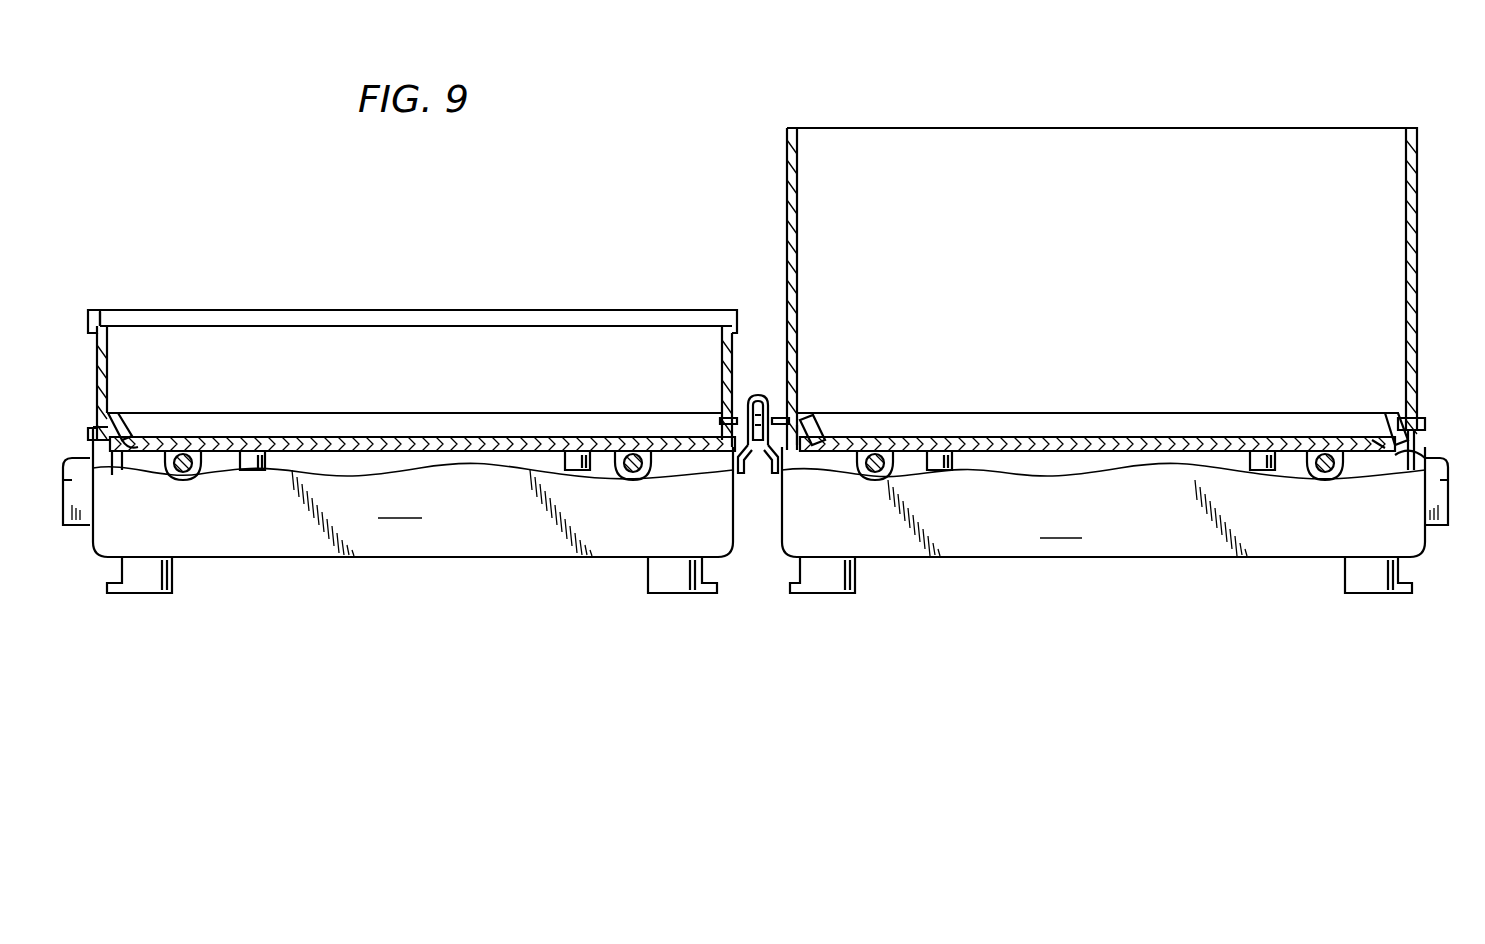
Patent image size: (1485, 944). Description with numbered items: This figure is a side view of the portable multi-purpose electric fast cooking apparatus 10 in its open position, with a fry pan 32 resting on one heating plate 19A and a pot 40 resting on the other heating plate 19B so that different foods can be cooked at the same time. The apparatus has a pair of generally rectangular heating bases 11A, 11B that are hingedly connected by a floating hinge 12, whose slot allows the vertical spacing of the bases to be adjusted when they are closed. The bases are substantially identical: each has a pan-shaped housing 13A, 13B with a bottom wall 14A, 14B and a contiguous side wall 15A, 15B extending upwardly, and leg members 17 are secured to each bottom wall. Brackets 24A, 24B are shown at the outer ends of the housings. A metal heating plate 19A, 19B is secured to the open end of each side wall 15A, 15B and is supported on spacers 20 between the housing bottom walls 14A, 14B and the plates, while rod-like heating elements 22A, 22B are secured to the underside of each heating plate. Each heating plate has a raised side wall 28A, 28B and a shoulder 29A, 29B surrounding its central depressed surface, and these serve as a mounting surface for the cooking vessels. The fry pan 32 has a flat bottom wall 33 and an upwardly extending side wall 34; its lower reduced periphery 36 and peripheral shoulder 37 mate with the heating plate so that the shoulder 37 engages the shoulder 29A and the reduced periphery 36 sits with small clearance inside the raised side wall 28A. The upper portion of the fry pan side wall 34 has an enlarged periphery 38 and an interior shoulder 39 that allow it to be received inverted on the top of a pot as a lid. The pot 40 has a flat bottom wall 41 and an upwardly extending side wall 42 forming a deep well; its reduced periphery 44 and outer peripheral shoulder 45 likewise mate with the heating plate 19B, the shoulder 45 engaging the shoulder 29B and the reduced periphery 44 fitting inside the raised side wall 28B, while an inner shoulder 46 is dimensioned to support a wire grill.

The portable multi-purpose electric fast cooking apparatus 10 is at (500, 630).
The heating base 11A is at (413, 492).
The heating base 11B is at (1103, 502).
The floating hinge 12 is at (755, 394).
The housing 13A is at (435, 557).
The housing 13B is at (1160, 557).
The bottom wall 14A is at (540, 557).
The bottom wall 14B is at (985, 557).
The side wall 15A is at (725, 472).
The side wall 15B is at (1410, 470).
The leg members 17 is at (170, 575).
The heating plate 19A is at (465, 452).
The heating plate 19B is at (1098, 455).
The spacers 20 is at (246, 465).
The heating element 22A is at (633, 472).
The heating element 22B is at (1328, 472).
The handle 24A is at (77, 527).
The handle 24B is at (1435, 527).
The raised side wall 28A is at (148, 466).
The raised side wall 28B is at (1385, 440).
The shoulder 29A is at (118, 452).
The shoulder 29B is at (800, 452).
The fry pan vessel 32 is at (350, 310).
The bottom wall 33 is at (285, 437).
The side wall 34 is at (108, 335).
The reduced periphery 36 is at (130, 440).
The peripheral shoulder 37 is at (110, 414).
The enlarged periphery 38 is at (95, 310).
The interior shoulder 39 is at (107, 310).
The pot vessel 40 is at (788, 150).
The bottom wall 41 is at (1050, 413).
The side wall 42 is at (798, 205).
The reduced periphery 44 is at (815, 443).
The outer peripheral shoulder 45 is at (800, 430).
The inner shoulder 46 is at (1395, 418).